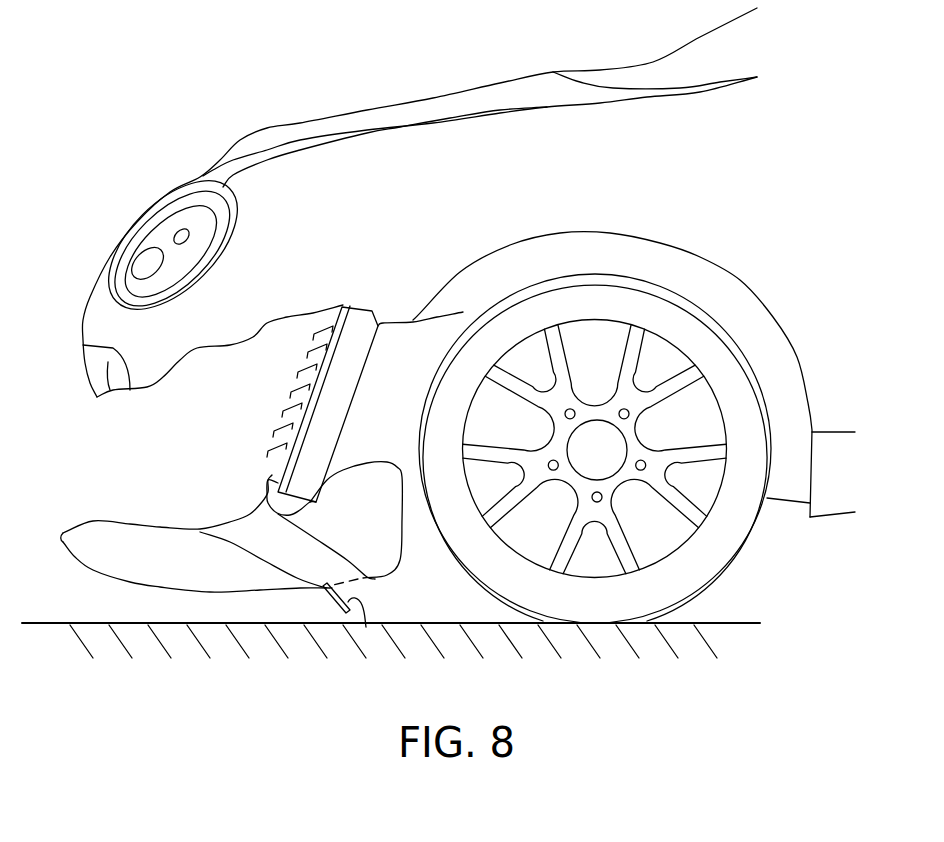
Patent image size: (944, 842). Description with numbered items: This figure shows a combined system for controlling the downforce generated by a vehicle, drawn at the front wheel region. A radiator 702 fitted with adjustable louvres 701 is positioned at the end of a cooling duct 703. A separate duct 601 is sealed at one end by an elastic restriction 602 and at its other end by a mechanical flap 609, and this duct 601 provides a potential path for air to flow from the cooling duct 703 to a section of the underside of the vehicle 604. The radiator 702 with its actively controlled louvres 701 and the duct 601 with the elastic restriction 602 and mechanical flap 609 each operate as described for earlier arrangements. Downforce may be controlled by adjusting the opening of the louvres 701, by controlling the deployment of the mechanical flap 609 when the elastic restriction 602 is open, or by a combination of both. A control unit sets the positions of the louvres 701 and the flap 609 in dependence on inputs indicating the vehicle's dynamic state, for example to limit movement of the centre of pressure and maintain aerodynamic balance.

The duct 601 is at (288, 548).
The elastic restriction 602 is at (227, 520).
The section of the underside of the vehicle 604 is at (420, 606).
The mechanical flap 609 is at (367, 627).
The adjustable louvres 701 is at (293, 404).
The radiator 702 is at (353, 366).
The cooling duct 703 is at (183, 450).